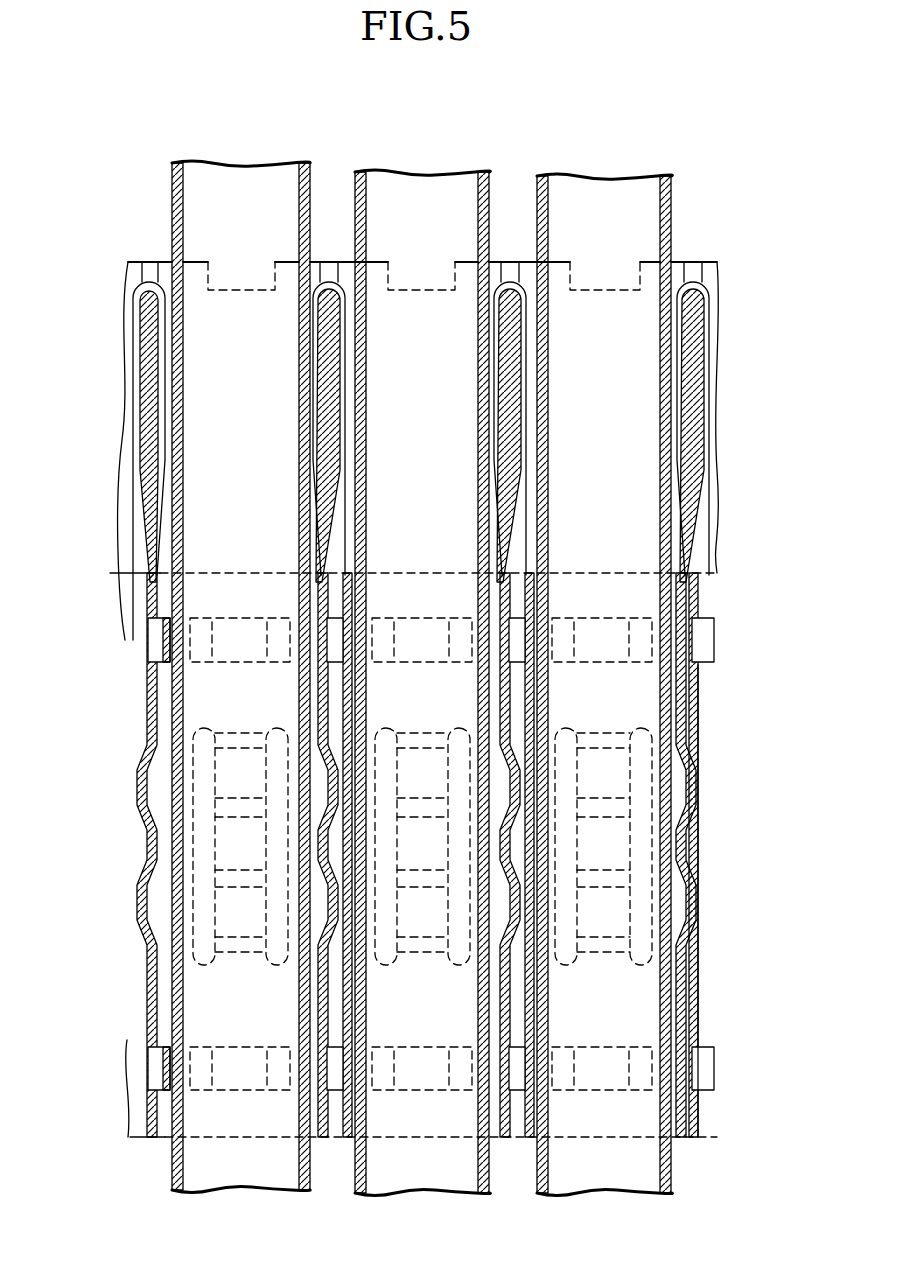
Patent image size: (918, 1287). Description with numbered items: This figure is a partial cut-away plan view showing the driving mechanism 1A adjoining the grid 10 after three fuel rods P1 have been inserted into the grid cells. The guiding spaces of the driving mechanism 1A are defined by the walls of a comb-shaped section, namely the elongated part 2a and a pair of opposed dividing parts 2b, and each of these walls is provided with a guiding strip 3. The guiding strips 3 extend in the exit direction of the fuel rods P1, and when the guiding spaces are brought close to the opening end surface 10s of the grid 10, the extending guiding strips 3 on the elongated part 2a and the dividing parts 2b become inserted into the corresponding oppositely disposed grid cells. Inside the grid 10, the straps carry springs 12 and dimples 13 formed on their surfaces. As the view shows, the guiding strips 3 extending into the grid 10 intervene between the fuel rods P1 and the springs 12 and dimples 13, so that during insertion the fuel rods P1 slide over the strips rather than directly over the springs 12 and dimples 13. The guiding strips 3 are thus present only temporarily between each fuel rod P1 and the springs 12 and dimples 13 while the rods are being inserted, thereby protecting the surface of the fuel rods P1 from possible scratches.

The driving mechanism 1A is at (726, 253).
The elongated part 2a is at (610, 291).
The dividing parts 2b is at (713, 385).
The guiding strip 3 is at (143, 290).
The grid 10 is at (713, 859).
The opening end surface 10s is at (156, 210).
The spring 12 is at (622, 832).
The dimples 13 is at (724, 650).
The fuel rod P1 is at (300, 196).